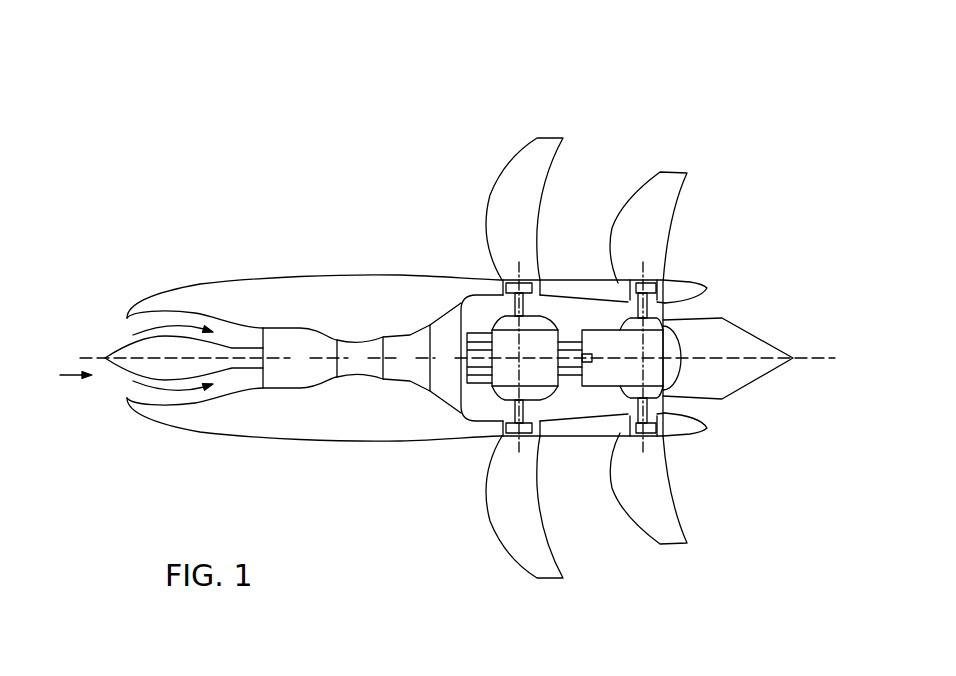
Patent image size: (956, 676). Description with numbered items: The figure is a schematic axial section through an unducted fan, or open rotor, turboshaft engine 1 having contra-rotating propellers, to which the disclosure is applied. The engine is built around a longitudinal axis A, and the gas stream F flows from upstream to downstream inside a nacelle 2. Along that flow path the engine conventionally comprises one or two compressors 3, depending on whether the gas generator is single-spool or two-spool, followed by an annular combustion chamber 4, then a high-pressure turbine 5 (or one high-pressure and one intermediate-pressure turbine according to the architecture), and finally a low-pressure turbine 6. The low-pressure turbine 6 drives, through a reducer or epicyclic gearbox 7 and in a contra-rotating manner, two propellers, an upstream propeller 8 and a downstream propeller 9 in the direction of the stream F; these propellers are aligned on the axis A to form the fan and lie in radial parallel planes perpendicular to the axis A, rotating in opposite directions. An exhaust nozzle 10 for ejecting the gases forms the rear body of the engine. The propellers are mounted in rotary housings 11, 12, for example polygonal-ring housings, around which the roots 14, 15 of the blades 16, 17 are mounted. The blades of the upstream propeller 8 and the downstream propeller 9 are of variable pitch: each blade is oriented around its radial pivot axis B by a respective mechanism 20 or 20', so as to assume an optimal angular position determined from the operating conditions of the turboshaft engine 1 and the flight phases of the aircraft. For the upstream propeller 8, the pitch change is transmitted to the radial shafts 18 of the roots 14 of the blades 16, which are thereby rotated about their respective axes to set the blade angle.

The turboshaft engine 1 is at (146, 261).
The nacelle 2 is at (266, 296).
The compressor 3 is at (294, 368).
The annular combustion chamber 4 is at (352, 368).
The high-pressure turbine 5 is at (400, 368).
The low-pressure turbine 6 is at (439, 368).
The epicyclic gearbox 7 is at (456, 313).
The upstream propeller 8 is at (485, 538).
The downstream propeller 9 is at (692, 523).
The exhaust nozzle 10 is at (766, 390).
The rotary housing 11 is at (503, 402).
The rotary housing 12 is at (625, 412).
The blade root 14 is at (504, 283).
The blade root 15 is at (644, 283).
The blade 16 is at (542, 148).
The blade 17 is at (667, 185).
The radial shaft 18 is at (502, 287).
The pitch-change mechanism 20 is at (540, 316).
The pitch-change mechanism 20' is at (621, 301).
The longitudinal axis A is at (807, 355).
The radial pivot axis B is at (518, 448).
The gas stream F is at (66, 385).